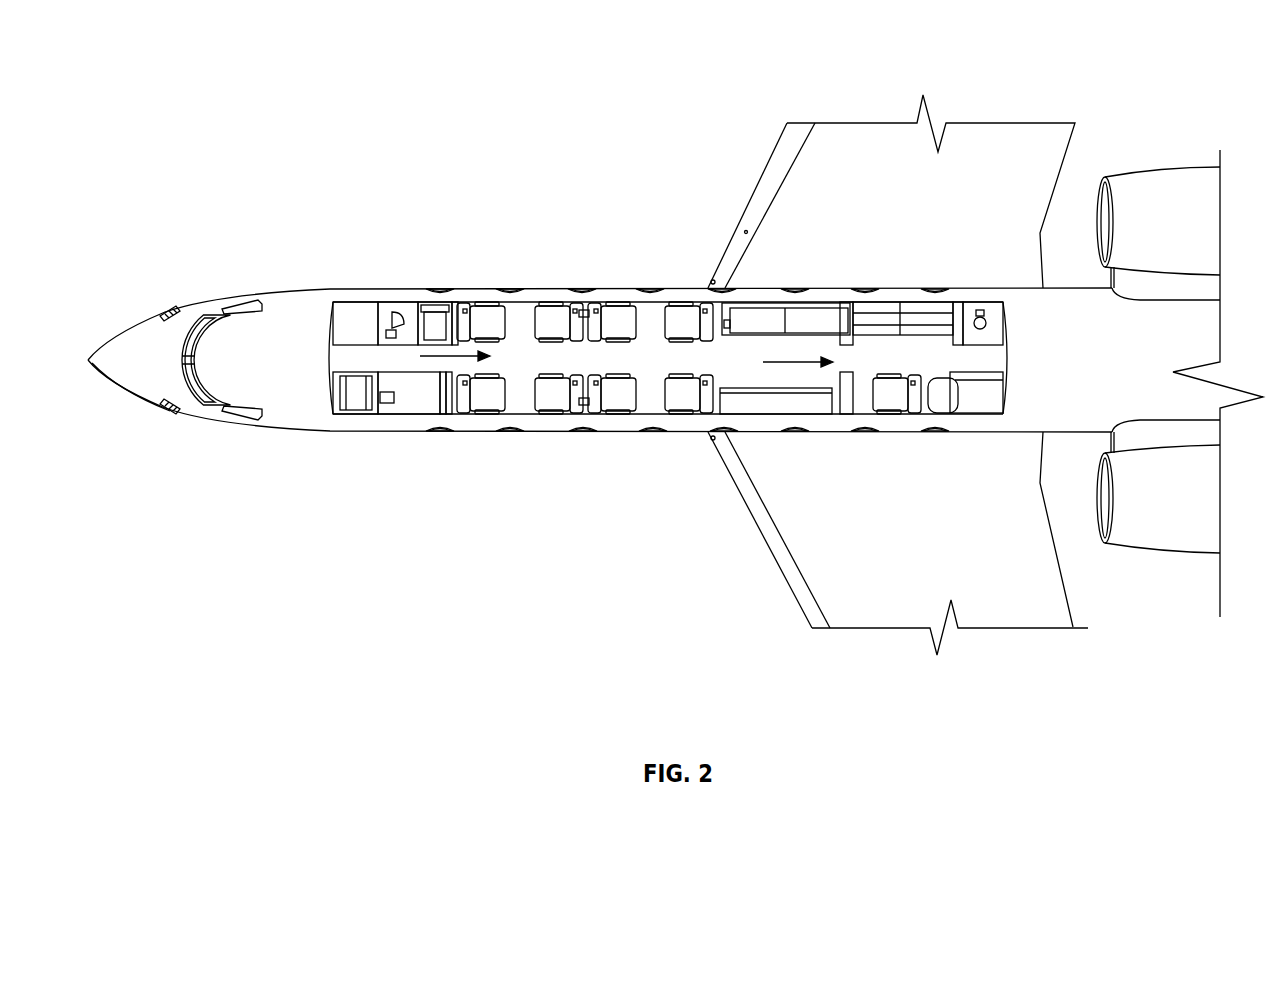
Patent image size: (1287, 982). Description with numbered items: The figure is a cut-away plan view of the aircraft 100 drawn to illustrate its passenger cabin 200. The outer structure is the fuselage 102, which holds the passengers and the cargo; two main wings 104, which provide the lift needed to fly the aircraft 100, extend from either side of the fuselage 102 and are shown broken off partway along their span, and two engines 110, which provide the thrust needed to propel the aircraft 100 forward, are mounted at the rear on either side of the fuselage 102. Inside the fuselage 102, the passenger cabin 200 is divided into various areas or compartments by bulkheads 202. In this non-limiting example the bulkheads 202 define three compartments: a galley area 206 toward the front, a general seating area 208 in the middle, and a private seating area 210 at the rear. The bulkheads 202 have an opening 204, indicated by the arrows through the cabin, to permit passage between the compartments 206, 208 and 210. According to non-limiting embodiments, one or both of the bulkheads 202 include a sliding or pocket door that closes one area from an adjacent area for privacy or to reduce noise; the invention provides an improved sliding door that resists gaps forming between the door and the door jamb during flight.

The aircraft 100 is at (675, 375).
The fuselage 102 is at (545, 295).
The main wings 104 is at (1043, 163).
The engines 110 is at (1172, 175).
The passenger cabin 200 is at (668, 363).
The bulkheads 202 is at (445, 413).
The opening 204 is at (452, 349).
The galley area 206 is at (348, 352).
The general seating area 208 is at (651, 395).
The private seating area 210 is at (926, 350).